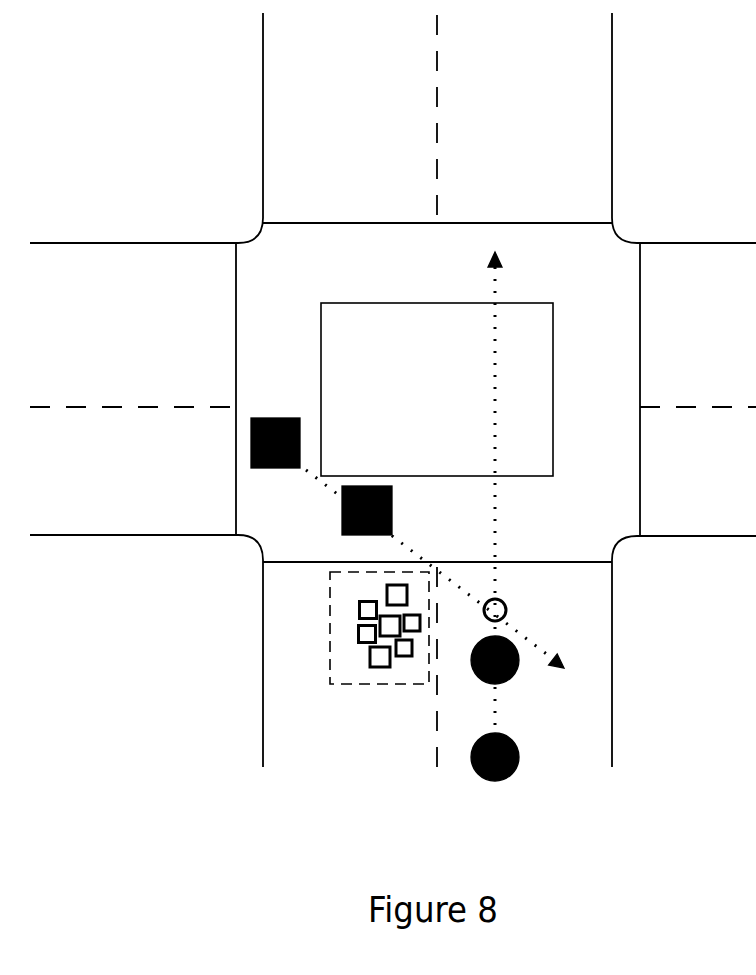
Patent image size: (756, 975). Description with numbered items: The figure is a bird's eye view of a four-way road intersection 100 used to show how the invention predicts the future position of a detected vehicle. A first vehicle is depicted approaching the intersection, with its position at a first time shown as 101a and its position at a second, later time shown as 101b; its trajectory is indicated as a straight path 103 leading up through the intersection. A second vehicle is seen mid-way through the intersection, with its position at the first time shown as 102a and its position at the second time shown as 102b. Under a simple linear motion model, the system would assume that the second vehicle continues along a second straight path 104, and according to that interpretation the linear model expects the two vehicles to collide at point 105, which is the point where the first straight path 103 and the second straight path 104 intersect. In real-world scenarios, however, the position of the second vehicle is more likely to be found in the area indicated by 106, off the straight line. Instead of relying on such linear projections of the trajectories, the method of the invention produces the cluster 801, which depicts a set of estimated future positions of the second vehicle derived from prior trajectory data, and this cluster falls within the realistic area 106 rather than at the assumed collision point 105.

The four-way road intersection 100 is at (253, 541).
The position of the first vehicle at a first time 101a is at (517, 767).
The position of the first vehicle at a second time 101b is at (517, 675).
The position of the second vehicle at a first time 102a is at (275, 418).
The position of the second vehicle at a second time 102b is at (342, 511).
The straight path 103 is at (494, 292).
The second straight path 104 is at (575, 668).
The collision point 105 is at (506, 605).
The area of likely position of the second vehicle 106 is at (378, 687).
The cluster of estimated future positions 801 is at (364, 650).